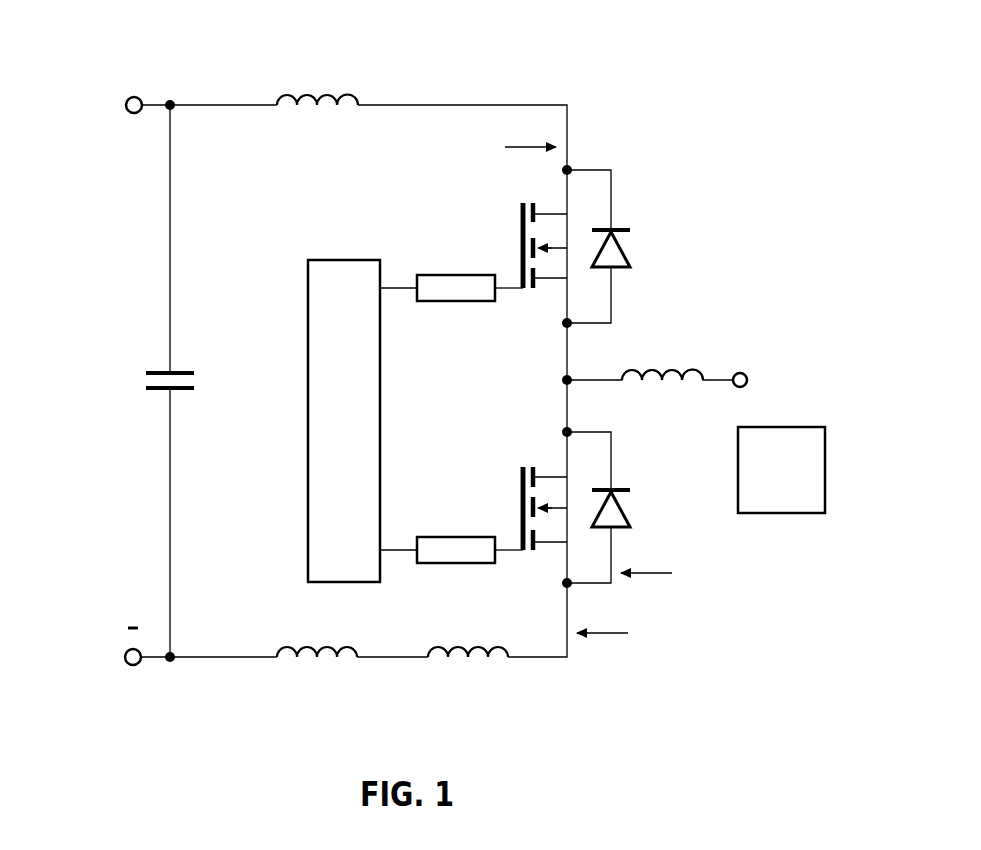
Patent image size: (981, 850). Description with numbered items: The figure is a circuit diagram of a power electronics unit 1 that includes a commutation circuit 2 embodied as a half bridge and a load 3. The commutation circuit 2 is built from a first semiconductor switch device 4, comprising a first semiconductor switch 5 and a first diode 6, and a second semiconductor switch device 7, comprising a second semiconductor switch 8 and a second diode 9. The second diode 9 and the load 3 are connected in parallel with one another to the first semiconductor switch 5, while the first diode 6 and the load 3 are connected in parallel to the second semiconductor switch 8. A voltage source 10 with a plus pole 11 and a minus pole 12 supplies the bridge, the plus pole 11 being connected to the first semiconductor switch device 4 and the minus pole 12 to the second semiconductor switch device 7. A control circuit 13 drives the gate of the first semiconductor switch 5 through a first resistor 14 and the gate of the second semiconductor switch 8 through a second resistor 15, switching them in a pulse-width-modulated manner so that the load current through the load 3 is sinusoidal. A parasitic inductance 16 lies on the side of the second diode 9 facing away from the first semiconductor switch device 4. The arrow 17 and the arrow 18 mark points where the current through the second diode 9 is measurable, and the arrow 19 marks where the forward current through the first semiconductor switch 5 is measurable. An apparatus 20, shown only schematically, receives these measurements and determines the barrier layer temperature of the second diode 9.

The power electronics unit 1 is at (625, 132).
The commutation circuit 2 is at (683, 542).
The load 3 is at (695, 372).
The first semiconductor switch device 4 is at (525, 194).
The first semiconductor switch 5 is at (521, 210).
The first diode 6 is at (615, 257).
The second semiconductor switch device 7 is at (536, 451).
The second semiconductor switch 8 is at (521, 485).
The second diode 9 is at (615, 515).
The voltage source 10 is at (108, 164).
The plus pole 11 is at (128, 98).
The minus pole 12 is at (128, 650).
The control circuit 13 is at (345, 268).
The first resistor 14 is at (430, 283).
The second resistor 15 is at (432, 543).
The parasitic inductance 16 is at (499, 667).
The arrow 17 is at (657, 577).
The arrow 18 is at (607, 636).
The arrow 19 is at (511, 147).
The apparatus 20 is at (795, 437).